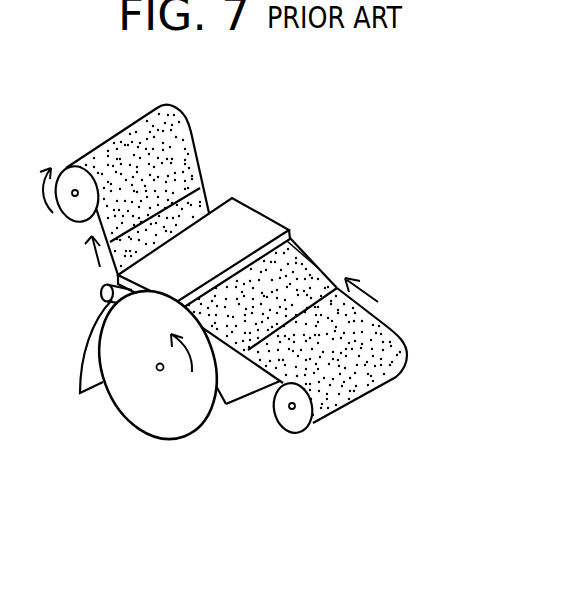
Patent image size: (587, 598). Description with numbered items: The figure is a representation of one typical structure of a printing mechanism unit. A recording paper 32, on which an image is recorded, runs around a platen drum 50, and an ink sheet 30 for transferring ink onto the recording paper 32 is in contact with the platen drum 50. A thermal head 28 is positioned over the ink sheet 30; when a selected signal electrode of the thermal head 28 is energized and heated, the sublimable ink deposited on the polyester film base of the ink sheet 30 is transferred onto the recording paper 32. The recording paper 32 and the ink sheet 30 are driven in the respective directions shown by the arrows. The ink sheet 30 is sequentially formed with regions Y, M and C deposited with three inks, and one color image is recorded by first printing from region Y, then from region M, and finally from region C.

The thermal head 28 is at (264, 210).
The ink sheet 30 is at (92, 137).
The recording paper 32 is at (245, 392).
The platen drum 50 is at (145, 405).
The region Y is at (191, 133).
The region M is at (320, 272).
The region C is at (386, 323).